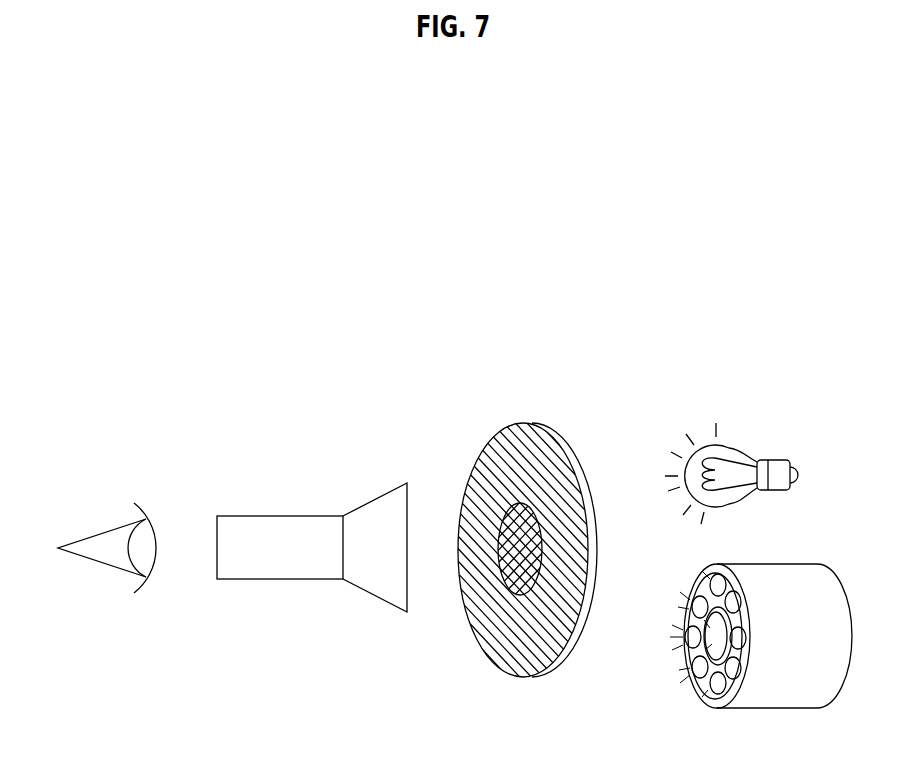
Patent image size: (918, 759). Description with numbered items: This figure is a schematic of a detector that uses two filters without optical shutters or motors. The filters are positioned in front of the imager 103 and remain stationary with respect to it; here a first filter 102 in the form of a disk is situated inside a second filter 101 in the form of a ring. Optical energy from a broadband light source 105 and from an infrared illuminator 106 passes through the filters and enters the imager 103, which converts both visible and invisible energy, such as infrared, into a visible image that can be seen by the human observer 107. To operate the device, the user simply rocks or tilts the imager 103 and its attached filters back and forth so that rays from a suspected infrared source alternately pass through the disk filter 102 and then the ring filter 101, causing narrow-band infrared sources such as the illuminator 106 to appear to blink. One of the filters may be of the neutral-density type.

The first filter 101 is at (507, 455).
The second filter 102 is at (527, 565).
The imager 103 is at (252, 533).
The broadband light source 105 is at (725, 452).
The infrared illuminator 106 is at (755, 588).
The human observer 107 is at (102, 582).